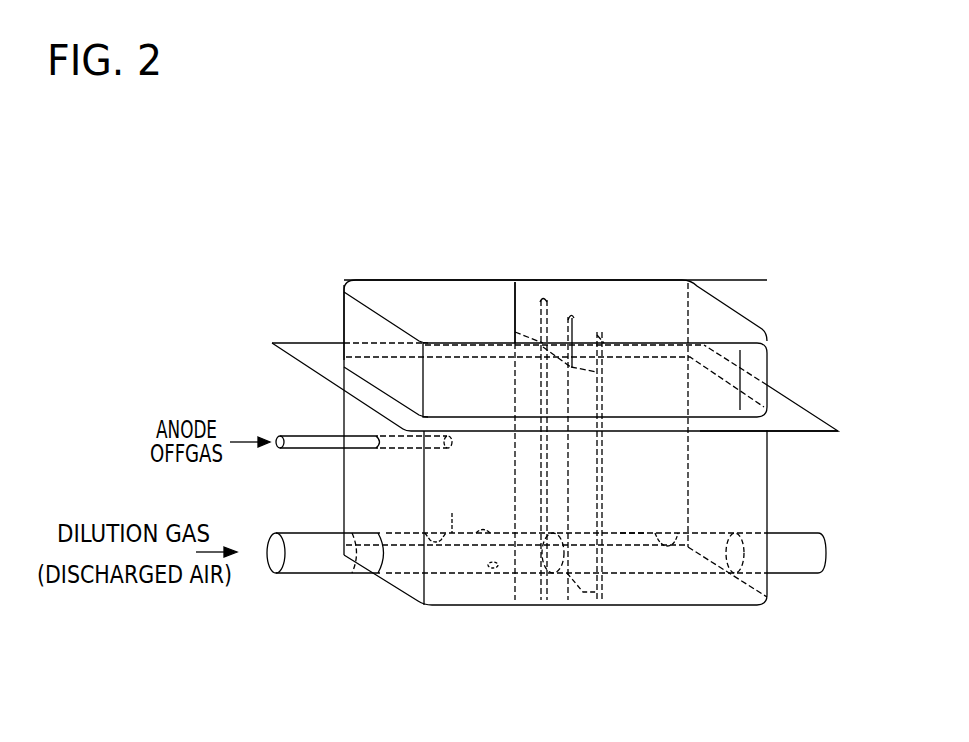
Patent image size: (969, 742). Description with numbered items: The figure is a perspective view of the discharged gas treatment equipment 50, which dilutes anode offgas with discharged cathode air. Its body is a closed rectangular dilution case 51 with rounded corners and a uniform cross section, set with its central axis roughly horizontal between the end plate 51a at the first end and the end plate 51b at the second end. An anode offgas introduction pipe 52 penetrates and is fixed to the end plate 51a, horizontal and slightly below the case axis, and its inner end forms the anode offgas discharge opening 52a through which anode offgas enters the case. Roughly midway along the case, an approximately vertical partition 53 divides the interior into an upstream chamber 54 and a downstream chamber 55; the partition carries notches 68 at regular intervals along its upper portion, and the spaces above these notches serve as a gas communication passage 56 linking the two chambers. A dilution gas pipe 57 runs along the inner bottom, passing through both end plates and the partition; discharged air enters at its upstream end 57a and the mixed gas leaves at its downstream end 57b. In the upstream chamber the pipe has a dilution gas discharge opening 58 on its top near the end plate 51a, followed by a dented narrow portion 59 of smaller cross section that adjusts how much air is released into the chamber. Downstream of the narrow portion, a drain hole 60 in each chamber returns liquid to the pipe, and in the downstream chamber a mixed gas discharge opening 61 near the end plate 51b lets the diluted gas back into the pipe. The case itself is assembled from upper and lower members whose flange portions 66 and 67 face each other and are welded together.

The discharged gas treatment equipment 50 is at (466, 200).
The dilution case 51 is at (667, 280).
The end plate 51a is at (343, 306).
The end plate 51b is at (752, 361).
The anode offgas introduction pipe 52 is at (305, 436).
The anode offgas discharge opening 52a is at (452, 437).
The partition 53 is at (512, 334).
The upstream chamber 54 is at (452, 513).
The downstream chamber 55 is at (632, 507).
The gas communication passage 56 is at (543, 300).
The dilution gas pipe 57 is at (551, 598).
The upstream end 57a is at (300, 575).
The downstream end 57b is at (802, 575).
The dilution gas discharge opening 58 is at (433, 538).
The narrow portion 59 is at (490, 547).
The drain hole 60 is at (493, 570).
The mixed gas discharge opening 61 is at (667, 545).
The flange portion 66 is at (808, 413).
The flange portion 67 is at (820, 434).
The notches 68 is at (557, 343).